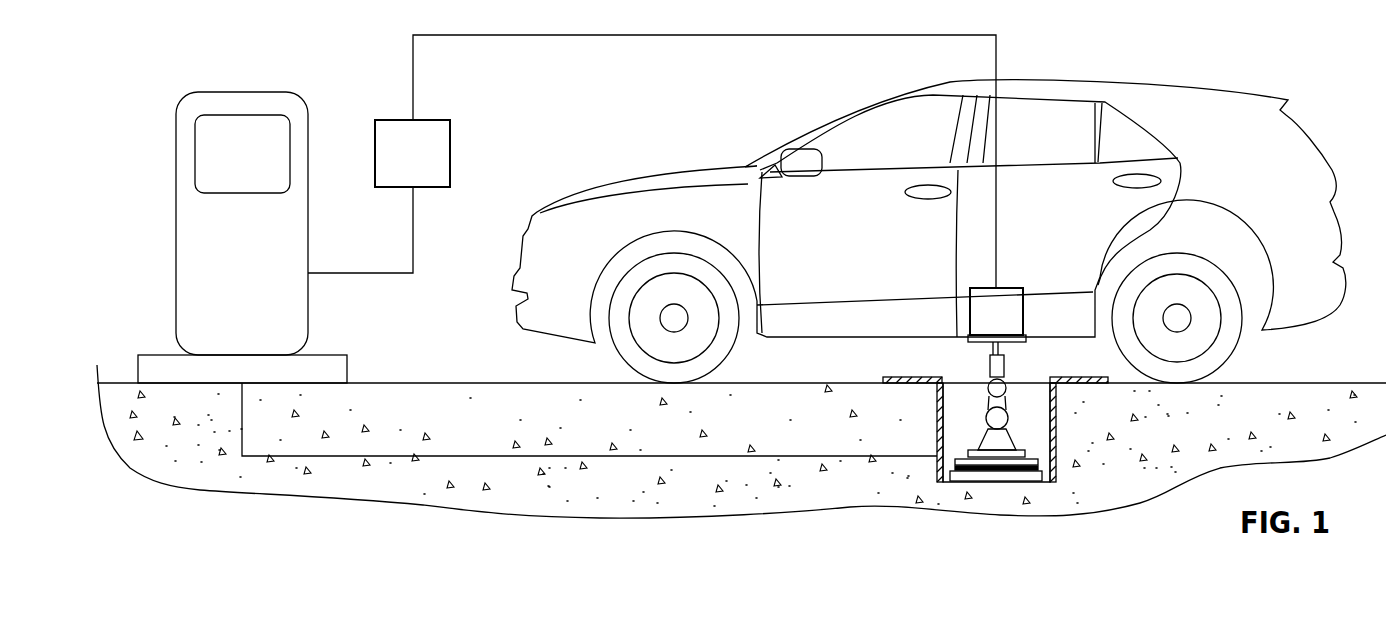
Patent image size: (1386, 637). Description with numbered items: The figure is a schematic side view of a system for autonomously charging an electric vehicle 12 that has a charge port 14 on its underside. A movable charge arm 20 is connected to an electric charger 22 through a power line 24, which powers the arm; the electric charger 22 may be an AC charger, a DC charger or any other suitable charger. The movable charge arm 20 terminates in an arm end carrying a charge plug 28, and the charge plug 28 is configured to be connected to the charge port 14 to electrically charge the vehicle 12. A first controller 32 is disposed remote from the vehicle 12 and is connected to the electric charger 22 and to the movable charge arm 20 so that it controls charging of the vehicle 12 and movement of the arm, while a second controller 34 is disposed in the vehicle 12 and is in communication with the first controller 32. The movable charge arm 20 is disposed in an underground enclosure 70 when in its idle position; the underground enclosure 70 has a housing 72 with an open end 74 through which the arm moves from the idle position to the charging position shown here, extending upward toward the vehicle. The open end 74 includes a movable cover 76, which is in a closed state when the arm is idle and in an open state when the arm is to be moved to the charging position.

The electric vehicle 12 is at (660, 175).
The charge port 14 is at (950, 336).
The movable charge arm 20 is at (986, 402).
The electric charger 22 is at (176, 217).
The power line 24 is at (445, 457).
The charge plug 28 is at (1000, 350).
The first controller 32 is at (437, 150).
The second controller 34 is at (1005, 305).
The underground enclosure 70 is at (940, 400).
The housing 72 is at (1056, 435).
The open end 74 is at (951, 381).
The movable cover 76 is at (883, 373).